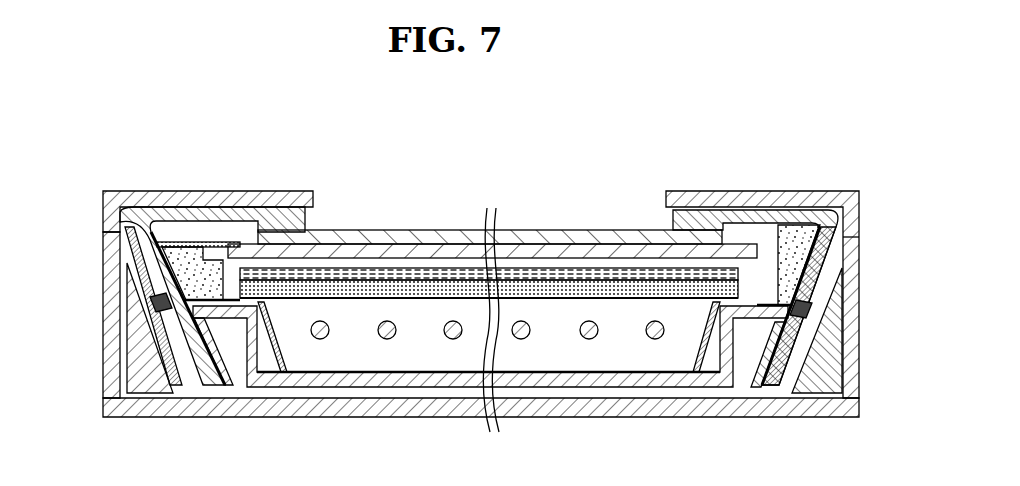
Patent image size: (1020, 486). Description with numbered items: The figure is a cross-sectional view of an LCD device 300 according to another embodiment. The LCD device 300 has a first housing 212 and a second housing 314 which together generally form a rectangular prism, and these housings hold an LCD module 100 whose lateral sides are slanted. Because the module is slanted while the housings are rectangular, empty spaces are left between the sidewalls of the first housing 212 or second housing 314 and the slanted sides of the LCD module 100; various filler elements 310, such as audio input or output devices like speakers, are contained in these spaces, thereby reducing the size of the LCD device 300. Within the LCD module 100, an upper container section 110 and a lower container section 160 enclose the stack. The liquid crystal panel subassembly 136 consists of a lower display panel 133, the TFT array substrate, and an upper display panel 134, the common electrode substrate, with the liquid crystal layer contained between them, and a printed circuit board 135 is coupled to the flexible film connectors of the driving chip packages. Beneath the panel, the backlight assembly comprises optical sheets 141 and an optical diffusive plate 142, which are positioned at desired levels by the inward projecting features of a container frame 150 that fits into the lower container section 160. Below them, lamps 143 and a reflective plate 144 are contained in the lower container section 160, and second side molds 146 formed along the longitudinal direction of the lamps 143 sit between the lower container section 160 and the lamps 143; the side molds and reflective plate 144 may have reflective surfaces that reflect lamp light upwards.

The LCD device 300 is at (473, 272).
The LCD module 100 is at (489, 296).
The upper container section 110 is at (232, 194).
The lower display panel 133 is at (385, 252).
The upper display panel 134 is at (345, 230).
The printed circuit board 135 is at (124, 324).
The liquid crystal panel subassembly 136 is at (363, 166).
The optical sheets 141 is at (818, 304).
The optical diffusive plate 142 is at (812, 318).
The lamps 143 is at (329, 337).
The reflective plate 144 is at (446, 404).
The second side molds 146 is at (270, 323).
The container frame 150 is at (152, 303).
The lower container section 160 is at (345, 406).
The first housing 212 is at (108, 218).
The filler elements 310 is at (150, 388).
The second housing 314 is at (113, 258).